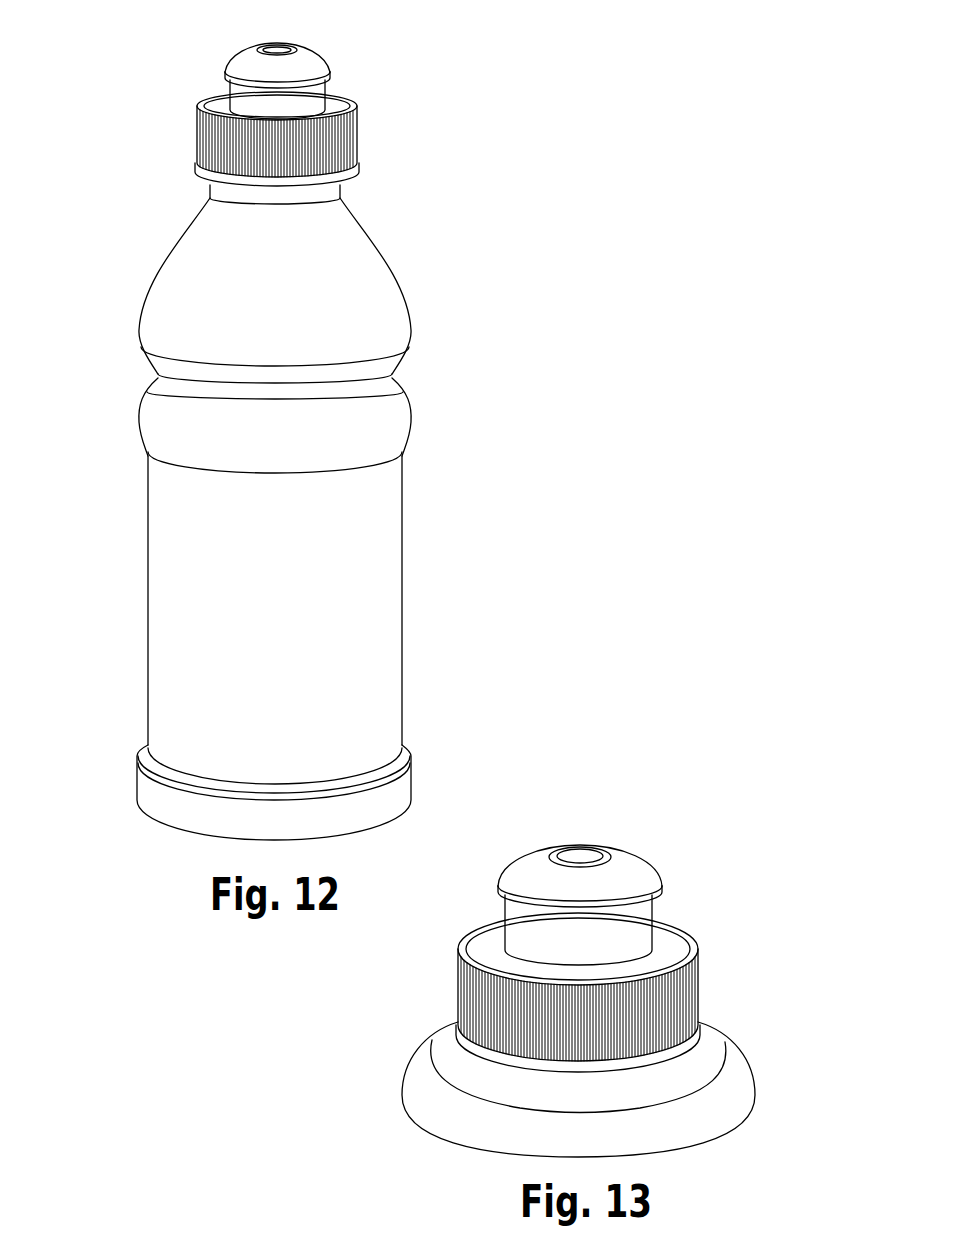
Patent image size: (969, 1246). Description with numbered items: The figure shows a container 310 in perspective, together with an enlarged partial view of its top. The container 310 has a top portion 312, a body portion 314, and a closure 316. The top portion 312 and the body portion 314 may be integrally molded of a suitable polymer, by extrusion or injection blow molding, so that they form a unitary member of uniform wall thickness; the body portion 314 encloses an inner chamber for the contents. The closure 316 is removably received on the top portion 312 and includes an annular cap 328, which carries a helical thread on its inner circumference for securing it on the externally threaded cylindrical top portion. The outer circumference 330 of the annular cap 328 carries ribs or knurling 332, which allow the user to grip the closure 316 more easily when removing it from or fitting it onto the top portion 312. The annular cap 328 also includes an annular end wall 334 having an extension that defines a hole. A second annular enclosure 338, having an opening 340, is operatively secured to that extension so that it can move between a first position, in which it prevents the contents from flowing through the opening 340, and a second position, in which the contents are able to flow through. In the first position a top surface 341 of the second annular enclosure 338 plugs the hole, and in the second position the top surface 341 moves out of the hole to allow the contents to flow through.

In FIG. 12, the container 310 is at (132, 212).
In FIG. 12, the top portion 312 is at (432, 252).
In FIG. 13, the top portion 312 is at (735, 1078).
In FIG. 12, the body portion 314 is at (435, 545).
In FIG. 12, the closure 316 is at (417, 100).
In FIG. 13, the closure 316 is at (748, 850).
In FIG. 13, the annular cap 328 is at (682, 937).
In FIG. 13, the outer circumference 330 is at (460, 1000).
In FIG. 13, the ribs or knurling 332 is at (698, 988).
In FIG. 13, the annular end wall 334 is at (488, 930).
In FIG. 13, the second annular enclosure 338 is at (641, 878).
In FIG. 13, the opening 340 is at (547, 860).
In FIG. 13, the top surface 341 is at (585, 852).